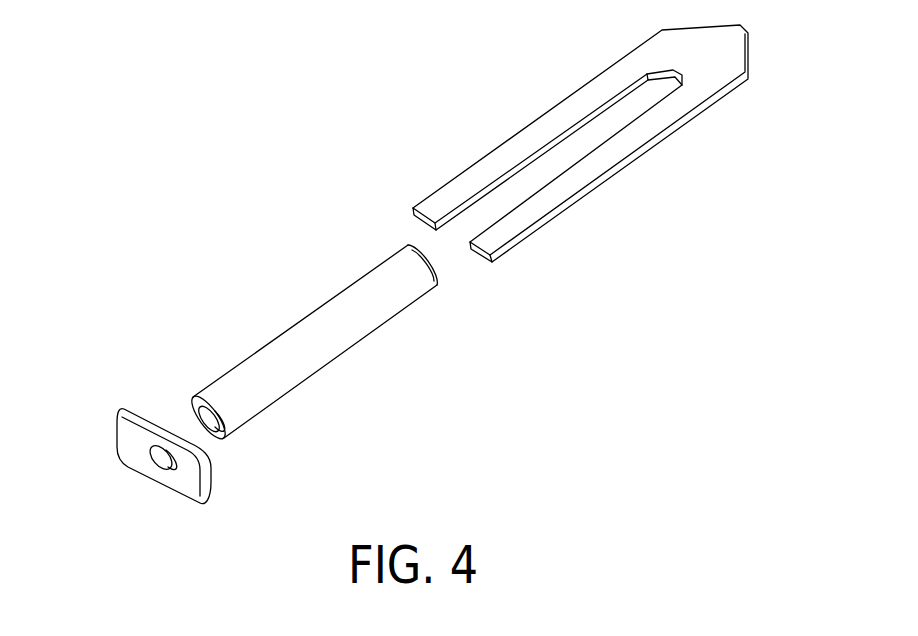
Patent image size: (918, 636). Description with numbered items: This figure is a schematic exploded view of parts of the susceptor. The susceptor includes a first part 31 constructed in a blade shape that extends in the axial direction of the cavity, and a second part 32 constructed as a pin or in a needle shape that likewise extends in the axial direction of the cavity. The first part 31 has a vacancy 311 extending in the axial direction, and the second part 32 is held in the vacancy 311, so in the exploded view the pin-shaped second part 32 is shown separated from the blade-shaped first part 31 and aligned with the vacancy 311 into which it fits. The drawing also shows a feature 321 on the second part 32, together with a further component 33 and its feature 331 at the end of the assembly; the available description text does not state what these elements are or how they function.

The first part 31 is at (589, 143).
The vacancy 311 is at (538, 180).
The second part 32 is at (264, 344).
The rod end hole 321 is at (198, 408).
The end block 33 is at (159, 471).
The block hole 331 is at (148, 458).